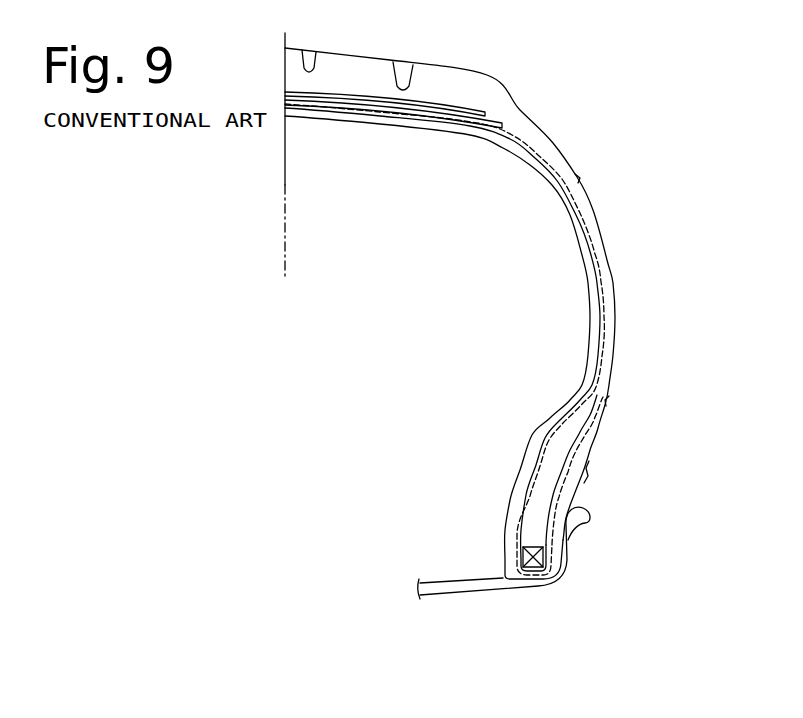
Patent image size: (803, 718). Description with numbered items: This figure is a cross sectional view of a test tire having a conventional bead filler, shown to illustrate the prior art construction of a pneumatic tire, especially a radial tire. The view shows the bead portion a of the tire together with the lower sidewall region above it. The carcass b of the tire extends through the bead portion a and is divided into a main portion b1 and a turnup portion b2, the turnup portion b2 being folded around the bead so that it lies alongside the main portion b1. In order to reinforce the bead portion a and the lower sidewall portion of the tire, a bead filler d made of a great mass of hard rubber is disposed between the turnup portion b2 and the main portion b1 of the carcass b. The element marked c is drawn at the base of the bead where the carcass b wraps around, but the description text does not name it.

The bead portion a is at (494, 493).
The carcass b is at (690, 350).
The main portion of the carcass b1 is at (597, 357).
The turnup portion of the carcass b2 is at (563, 537).
The bead core c is at (530, 570).
The bead filler d is at (548, 478).